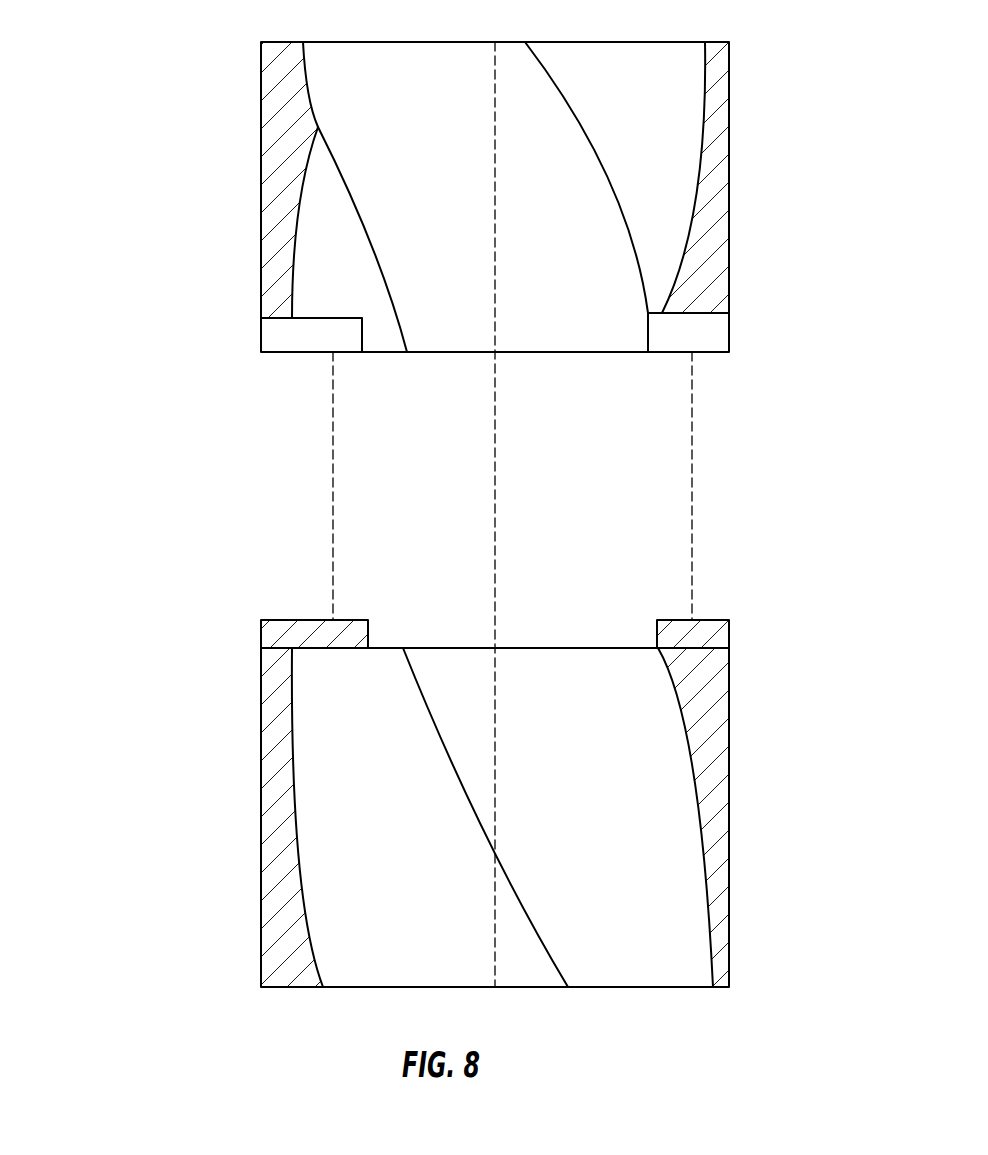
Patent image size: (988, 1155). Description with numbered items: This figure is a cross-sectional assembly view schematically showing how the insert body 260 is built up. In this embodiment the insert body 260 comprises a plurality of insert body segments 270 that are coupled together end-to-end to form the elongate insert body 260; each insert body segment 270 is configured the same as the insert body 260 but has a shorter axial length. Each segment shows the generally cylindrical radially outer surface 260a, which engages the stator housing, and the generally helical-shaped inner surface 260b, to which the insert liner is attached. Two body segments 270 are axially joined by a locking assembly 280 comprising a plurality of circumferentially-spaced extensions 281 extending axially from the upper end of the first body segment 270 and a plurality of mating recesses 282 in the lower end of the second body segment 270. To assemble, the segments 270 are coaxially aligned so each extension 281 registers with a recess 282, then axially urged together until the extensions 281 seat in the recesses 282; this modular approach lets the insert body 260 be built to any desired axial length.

The insert body 260 is at (205, 43).
The radially outer surface 260a is at (731, 262).
The inner surface 260b is at (700, 131).
The insert body segment 270 is at (731, 143).
The locking assembly 280 is at (747, 310).
The extension 281 is at (305, 617).
The mating recess 282 is at (281, 357).